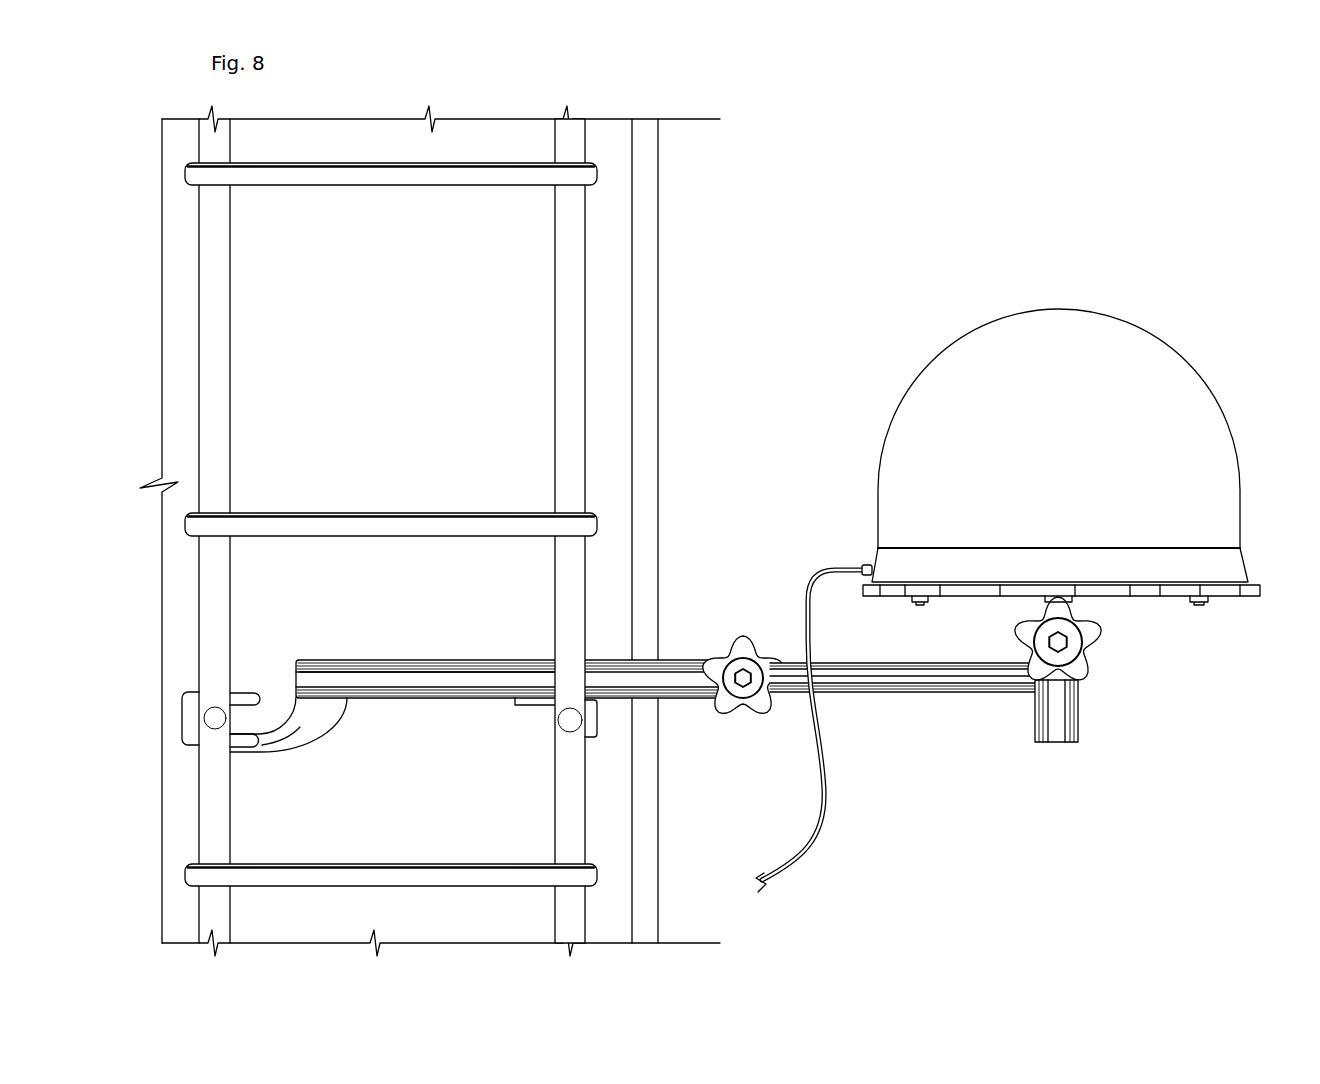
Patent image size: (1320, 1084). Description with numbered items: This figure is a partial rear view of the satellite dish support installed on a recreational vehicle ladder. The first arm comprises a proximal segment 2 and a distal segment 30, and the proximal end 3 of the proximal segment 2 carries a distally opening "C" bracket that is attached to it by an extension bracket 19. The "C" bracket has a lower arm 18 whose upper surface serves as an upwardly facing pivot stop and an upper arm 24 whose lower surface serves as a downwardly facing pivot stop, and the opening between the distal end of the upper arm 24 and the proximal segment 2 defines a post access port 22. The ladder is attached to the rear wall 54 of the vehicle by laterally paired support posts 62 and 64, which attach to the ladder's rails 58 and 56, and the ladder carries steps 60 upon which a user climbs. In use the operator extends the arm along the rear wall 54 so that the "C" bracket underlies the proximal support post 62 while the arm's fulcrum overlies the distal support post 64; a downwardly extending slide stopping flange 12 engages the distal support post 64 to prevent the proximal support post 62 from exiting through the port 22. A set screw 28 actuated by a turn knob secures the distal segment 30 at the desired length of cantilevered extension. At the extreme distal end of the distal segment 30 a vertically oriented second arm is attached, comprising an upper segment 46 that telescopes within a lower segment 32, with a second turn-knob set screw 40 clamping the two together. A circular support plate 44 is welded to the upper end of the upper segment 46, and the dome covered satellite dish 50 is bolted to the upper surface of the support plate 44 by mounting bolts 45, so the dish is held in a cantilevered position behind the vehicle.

The proximal segment 2 is at (612, 668).
The proximal end 3 is at (335, 668).
The slide stopping flange 12 is at (590, 715).
The lower arm 18 is at (240, 740).
The extension bracket 19 is at (305, 722).
The post access port 22 is at (277, 697).
The upper arm 24 is at (232, 697).
The set screw 28 is at (743, 645).
The distal segment 30 is at (878, 686).
The lower segment 32 is at (1070, 712).
The set screw 40 is at (1085, 655).
The support plate 44 is at (1215, 590).
The mounting bolts 45 is at (918, 602).
The upper segment 46 is at (1085, 600).
The dome covered satellite dish 50 is at (1130, 345).
The rear wall 54 is at (608, 330).
The ladder rail 56 is at (568, 238).
The ladder rail 58 is at (212, 292).
The ladder steps 60 is at (375, 172).
The proximal support post 62 is at (215, 718).
The distal support post 64 is at (572, 722).